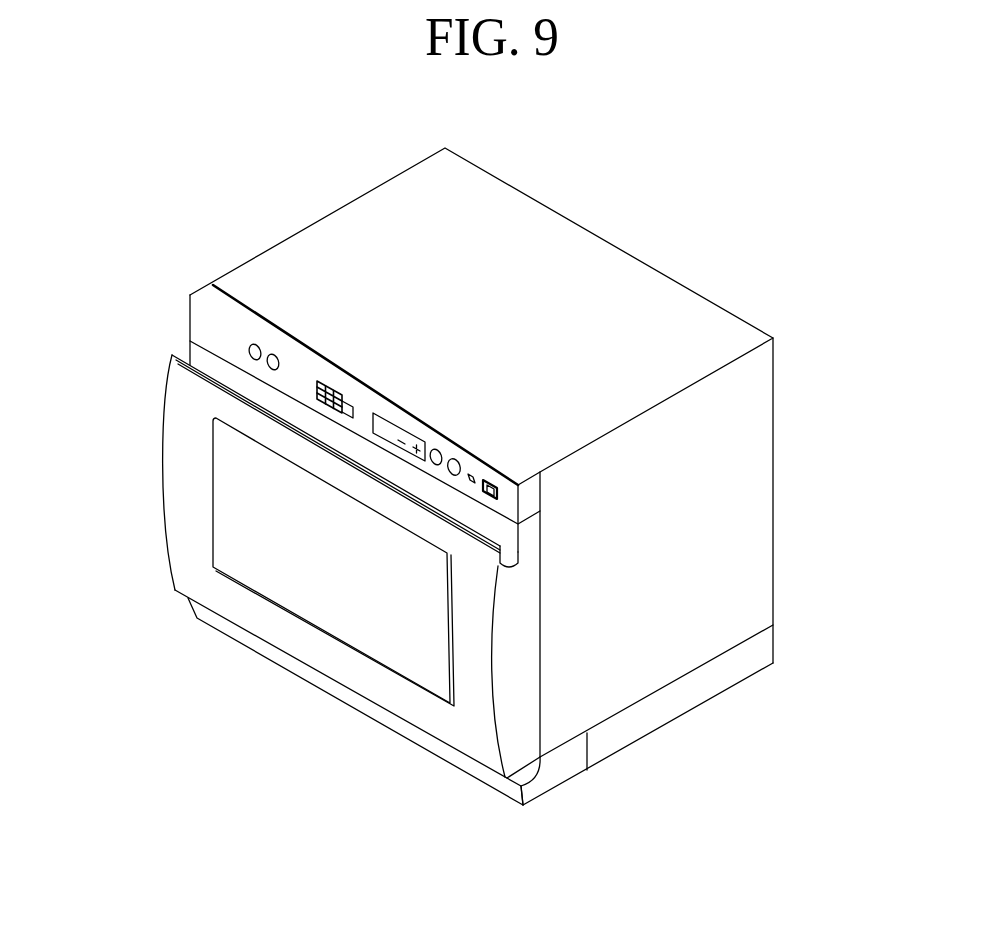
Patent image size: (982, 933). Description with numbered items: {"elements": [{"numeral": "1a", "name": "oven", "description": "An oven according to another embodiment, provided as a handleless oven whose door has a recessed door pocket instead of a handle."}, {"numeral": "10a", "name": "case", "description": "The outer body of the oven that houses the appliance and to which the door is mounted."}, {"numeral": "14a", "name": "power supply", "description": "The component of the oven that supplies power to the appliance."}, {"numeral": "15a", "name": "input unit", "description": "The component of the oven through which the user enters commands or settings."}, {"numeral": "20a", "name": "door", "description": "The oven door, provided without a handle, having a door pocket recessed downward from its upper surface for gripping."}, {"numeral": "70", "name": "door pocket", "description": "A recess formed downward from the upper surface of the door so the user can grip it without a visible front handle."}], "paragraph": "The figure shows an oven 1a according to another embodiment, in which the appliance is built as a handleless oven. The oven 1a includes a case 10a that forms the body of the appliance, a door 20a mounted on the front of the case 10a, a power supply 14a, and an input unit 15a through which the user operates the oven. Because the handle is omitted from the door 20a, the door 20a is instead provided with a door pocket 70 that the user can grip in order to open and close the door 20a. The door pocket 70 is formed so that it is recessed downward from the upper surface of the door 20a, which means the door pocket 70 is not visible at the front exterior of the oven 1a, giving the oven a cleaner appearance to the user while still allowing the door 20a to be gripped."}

The cooking appliance 1a is at (761, 181).
The main body 10a is at (298, 245).
The dial 14a is at (450, 468).
The input unit 15a is at (318, 388).
The door 20a is at (378, 690).
The handle 70 is at (512, 568).